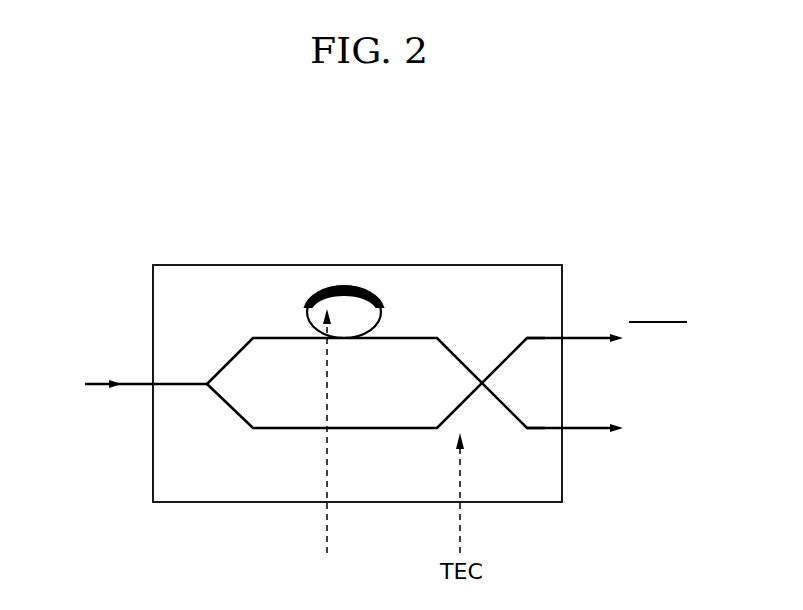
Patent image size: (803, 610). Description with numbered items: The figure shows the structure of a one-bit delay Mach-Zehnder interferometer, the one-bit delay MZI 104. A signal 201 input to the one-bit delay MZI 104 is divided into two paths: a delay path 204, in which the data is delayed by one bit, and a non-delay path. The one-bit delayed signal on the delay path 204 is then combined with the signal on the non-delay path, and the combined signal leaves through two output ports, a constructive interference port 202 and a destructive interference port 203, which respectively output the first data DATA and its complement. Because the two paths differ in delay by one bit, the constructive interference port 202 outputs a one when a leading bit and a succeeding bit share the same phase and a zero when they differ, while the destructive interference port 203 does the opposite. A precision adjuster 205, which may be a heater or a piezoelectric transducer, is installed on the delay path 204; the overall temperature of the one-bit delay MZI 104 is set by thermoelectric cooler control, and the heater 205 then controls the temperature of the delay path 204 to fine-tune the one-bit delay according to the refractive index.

The 1-bit delay MZI 104 is at (378, 200).
The signal 201 is at (87, 385).
The constructive interference port 202 is at (583, 431).
The destructive interference port 203 is at (590, 334).
The delay path 204 is at (253, 338).
The precision adjuster 205 is at (380, 298).